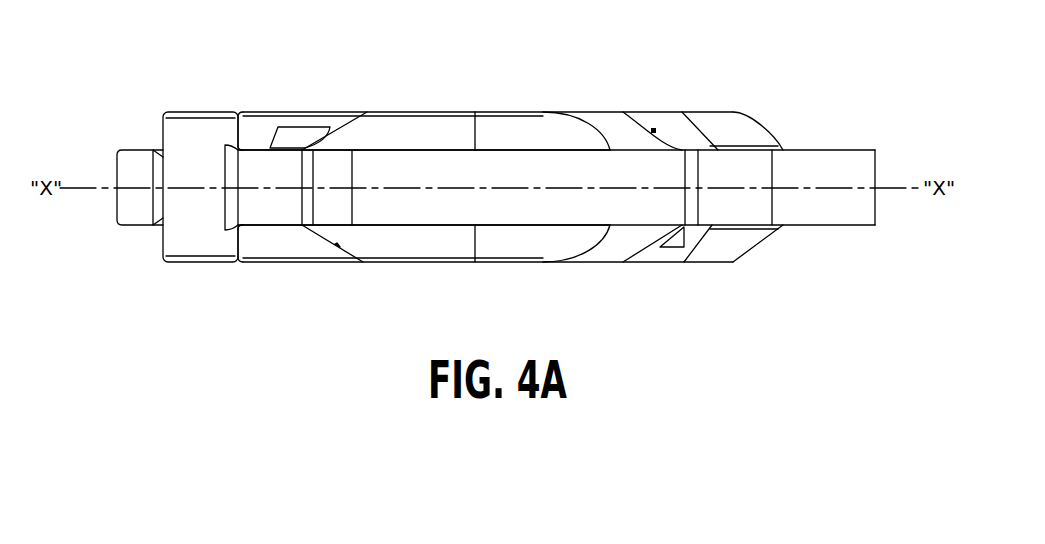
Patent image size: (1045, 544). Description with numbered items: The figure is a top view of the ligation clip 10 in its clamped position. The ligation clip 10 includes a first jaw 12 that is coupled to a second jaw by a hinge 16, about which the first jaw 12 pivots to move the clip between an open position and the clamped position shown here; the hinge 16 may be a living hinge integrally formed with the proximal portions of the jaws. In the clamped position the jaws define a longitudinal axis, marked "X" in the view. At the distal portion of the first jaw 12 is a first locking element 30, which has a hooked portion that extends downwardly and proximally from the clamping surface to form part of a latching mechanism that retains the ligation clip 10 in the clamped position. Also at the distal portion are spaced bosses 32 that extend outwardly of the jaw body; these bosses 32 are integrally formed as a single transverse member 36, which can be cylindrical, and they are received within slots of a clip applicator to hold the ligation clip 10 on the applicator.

The ligation clip 10 is at (498, 72).
The first jaw 12 is at (562, 173).
The hinge 16 is at (877, 143).
The first locking element 30 is at (139, 212).
The spaced bosses 32 is at (203, 130).
The transverse member 36 is at (170, 133).